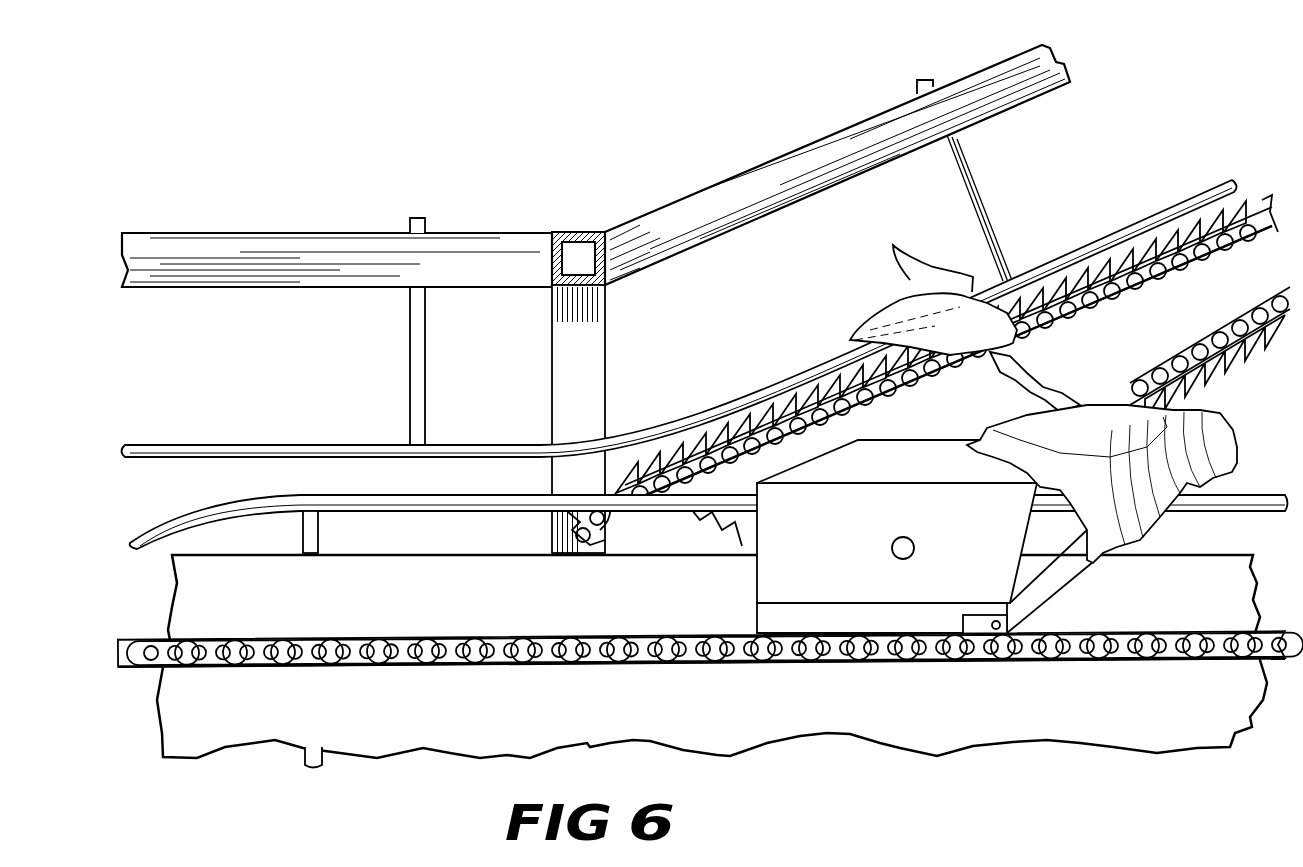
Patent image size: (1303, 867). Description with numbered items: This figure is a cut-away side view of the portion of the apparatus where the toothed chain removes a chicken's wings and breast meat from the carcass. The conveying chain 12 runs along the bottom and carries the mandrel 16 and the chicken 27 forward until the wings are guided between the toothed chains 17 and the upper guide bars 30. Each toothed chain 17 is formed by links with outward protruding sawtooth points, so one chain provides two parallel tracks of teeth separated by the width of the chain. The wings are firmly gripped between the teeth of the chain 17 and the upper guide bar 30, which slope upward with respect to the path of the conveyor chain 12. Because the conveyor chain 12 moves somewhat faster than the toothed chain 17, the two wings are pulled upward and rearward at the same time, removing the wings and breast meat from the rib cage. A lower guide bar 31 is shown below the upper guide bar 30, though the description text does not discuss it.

The conveying chain 12 is at (393, 667).
The mandrel 16 is at (998, 561).
The toothed chain 17 is at (1153, 250).
The chicken 27 is at (1110, 483).
The upper guide bar 30 is at (667, 418).
The lower guide tube 31 is at (466, 497).